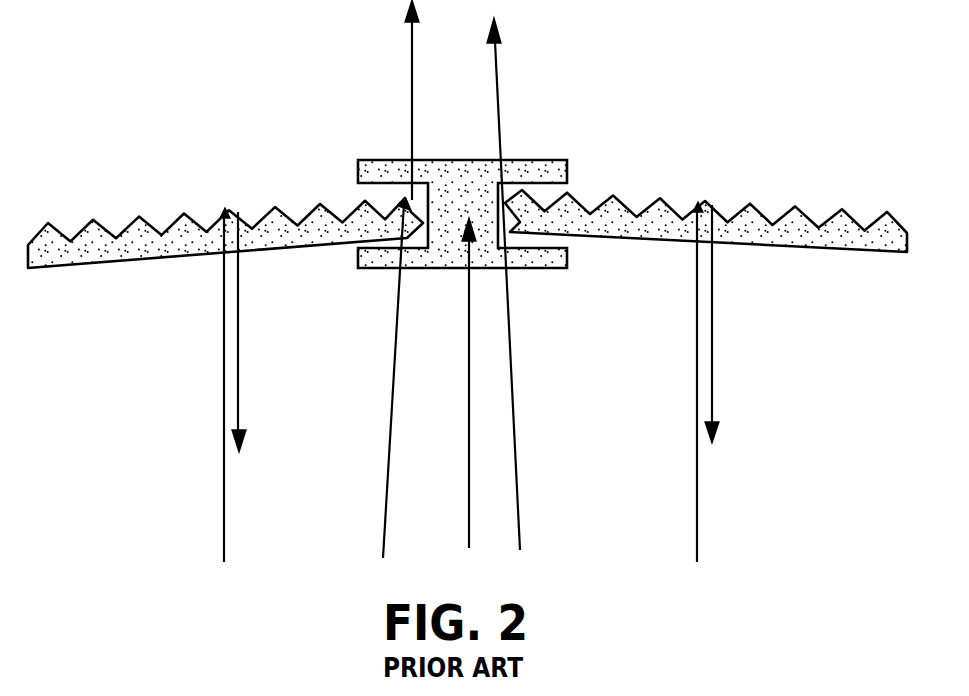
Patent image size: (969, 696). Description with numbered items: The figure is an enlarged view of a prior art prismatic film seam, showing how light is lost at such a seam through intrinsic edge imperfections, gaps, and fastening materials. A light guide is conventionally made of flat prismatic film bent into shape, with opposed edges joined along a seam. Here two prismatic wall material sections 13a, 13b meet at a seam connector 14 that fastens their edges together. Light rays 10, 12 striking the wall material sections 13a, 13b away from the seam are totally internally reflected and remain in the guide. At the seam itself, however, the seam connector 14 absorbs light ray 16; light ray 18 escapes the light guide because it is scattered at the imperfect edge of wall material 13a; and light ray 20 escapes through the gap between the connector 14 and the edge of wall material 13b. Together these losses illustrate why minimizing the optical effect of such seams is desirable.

The light ray 10 is at (216, 385).
The light ray 12 is at (714, 382).
The prismatic wall material section 13a is at (62, 255).
The prismatic wall material section 13b is at (850, 247).
The seam connector 14 is at (485, 207).
The light ray 16 is at (465, 402).
The light ray 18 is at (384, 279).
The light ray 20 is at (521, 284).